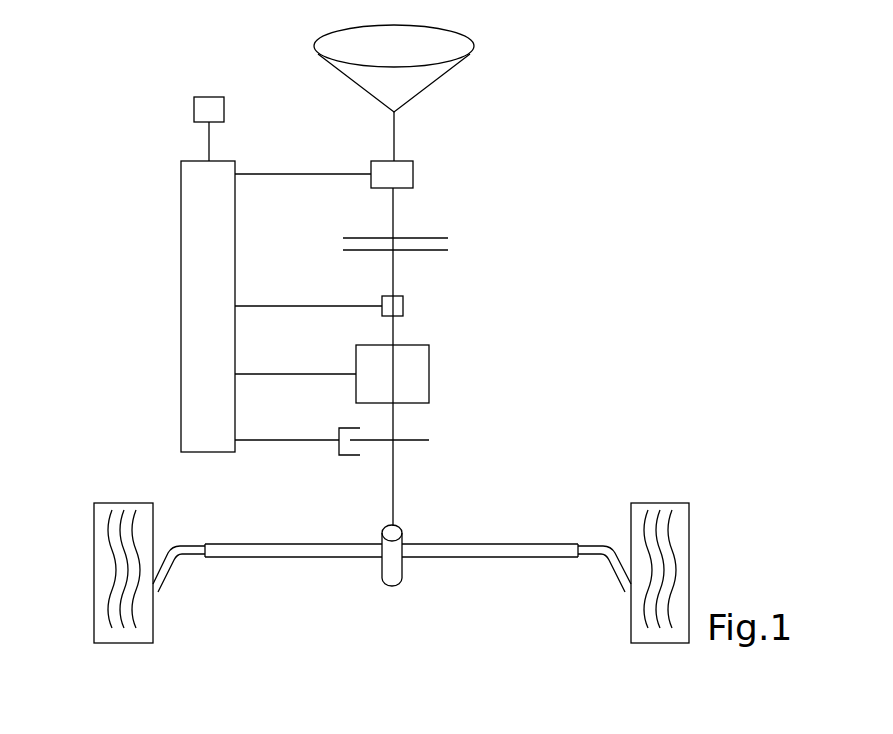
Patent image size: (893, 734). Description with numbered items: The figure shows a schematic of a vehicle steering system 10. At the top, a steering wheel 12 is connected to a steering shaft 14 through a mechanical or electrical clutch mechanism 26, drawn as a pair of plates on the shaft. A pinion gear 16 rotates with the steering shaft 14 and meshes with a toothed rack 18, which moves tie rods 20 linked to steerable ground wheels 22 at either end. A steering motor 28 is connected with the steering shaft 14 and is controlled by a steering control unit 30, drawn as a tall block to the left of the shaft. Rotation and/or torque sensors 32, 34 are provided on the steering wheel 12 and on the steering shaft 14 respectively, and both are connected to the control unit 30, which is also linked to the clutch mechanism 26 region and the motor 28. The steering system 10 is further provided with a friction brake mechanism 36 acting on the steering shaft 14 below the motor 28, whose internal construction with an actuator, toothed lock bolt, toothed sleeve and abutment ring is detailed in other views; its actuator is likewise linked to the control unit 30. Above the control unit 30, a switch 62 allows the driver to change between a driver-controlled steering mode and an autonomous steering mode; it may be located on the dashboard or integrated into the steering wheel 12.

The steering system 10 is at (642, 150).
The steering wheel 12 is at (462, 36).
The steering shaft 14 is at (393, 508).
The pinion gear 16 is at (382, 576).
The toothed rack 18 is at (533, 543).
The tie rods 20 is at (178, 559).
The steerable ground wheels 22 is at (94, 597).
The clutch mechanism 26 is at (443, 251).
The steering motor 28 is at (429, 357).
The steering control unit 30 is at (181, 218).
The rotation and/or torque sensor 32 is at (413, 173).
The rotation and/or torque sensor 34 is at (403, 305).
The friction brake mechanism 36 is at (448, 438).
The switch 62 is at (211, 96).